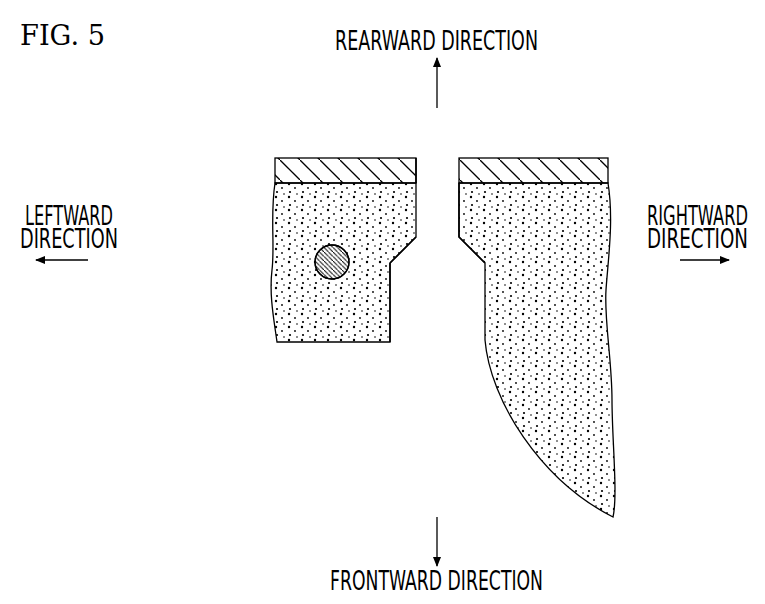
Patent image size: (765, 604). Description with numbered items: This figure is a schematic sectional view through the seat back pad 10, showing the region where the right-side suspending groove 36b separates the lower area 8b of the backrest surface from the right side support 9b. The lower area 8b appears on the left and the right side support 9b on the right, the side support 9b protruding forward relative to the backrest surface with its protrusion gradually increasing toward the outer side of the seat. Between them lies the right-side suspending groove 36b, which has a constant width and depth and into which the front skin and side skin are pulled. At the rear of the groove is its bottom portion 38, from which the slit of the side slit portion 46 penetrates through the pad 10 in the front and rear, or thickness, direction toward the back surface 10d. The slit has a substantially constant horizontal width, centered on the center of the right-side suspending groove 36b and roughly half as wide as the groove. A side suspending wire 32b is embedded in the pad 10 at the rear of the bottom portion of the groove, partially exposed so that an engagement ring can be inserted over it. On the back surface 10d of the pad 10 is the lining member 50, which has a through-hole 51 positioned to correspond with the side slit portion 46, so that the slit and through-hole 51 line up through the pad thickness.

The pad 10 is at (180, 403).
The lower area 8b is at (295, 320).
The right side support 9b is at (537, 443).
The back surface 10d is at (547, 186).
The side suspending wire 32b is at (327, 257).
The right-side suspending groove 36b is at (390, 326).
The bottom portion 38 is at (400, 253).
The side slit portion 46 is at (460, 201).
The lining member 50 is at (320, 158).
The through-hole 51 is at (416, 173).